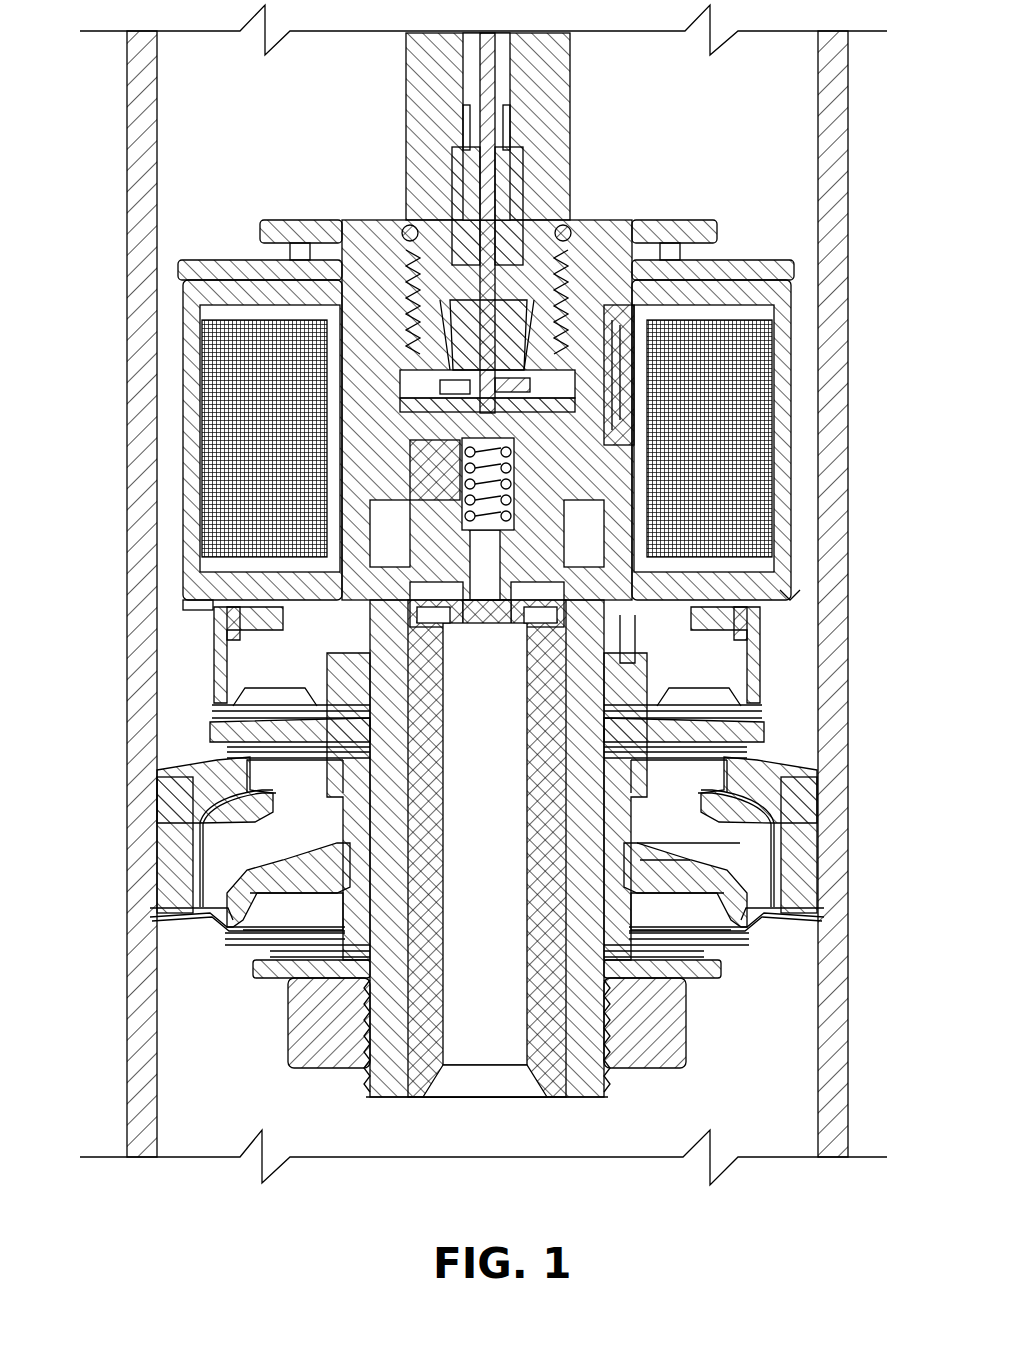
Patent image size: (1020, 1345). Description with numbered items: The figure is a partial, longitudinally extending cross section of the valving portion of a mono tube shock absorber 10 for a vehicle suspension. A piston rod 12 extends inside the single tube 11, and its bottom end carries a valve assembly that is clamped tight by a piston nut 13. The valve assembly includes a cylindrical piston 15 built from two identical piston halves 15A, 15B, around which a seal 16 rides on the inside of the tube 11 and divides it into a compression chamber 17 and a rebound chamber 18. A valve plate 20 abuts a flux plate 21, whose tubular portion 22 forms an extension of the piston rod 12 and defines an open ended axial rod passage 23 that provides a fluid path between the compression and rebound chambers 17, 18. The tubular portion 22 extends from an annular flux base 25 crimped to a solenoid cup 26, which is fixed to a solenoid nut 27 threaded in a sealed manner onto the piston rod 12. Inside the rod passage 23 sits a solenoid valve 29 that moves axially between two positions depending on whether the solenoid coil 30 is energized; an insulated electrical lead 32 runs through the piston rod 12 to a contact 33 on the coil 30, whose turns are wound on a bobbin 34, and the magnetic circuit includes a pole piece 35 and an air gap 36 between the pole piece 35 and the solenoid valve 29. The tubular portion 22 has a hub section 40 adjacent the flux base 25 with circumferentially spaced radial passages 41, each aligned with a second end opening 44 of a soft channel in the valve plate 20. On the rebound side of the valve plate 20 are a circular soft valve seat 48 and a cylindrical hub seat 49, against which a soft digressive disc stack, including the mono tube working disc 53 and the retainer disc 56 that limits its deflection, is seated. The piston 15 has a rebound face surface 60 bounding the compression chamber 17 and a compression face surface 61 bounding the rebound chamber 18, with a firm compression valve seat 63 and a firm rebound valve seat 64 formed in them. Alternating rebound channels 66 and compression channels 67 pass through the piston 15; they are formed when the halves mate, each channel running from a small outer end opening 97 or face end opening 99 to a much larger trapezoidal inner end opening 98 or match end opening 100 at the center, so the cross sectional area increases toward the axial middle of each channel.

The mono tube shock absorber 10 is at (90, 100).
The tube 11 is at (848, 73).
The piston rod 12 is at (570, 100).
The piston nut 13 is at (686, 1035).
The piston 15 is at (772, 918).
The piston half 15A is at (225, 923).
The piston half 15B is at (265, 793).
The seal 16 is at (157, 882).
The compression chamber 17 is at (486, 1132).
The rebound chamber 18 is at (709, 121).
The valve plate 20 is at (762, 632).
The flux plate 21 is at (193, 606).
The tubular portion 22 is at (597, 1097).
The axial rod passage 23 is at (487, 848).
The annular flux base 25 is at (812, 590).
The solenoid cup 26 is at (790, 332).
The solenoid nut 27 is at (655, 220).
The solenoid valve 29 is at (430, 580).
The solenoid coil 30 is at (790, 370).
The electrical lead 32 is at (497, 50).
The contact 33 is at (412, 404).
The bobbin 34 is at (690, 307).
The pole piece 35 is at (445, 472).
The air gap 36 is at (650, 463).
The hub section 40 is at (645, 660).
The radial passage 41 is at (610, 625).
The second end opening 44 is at (637, 638).
The soft valve seat 48 is at (756, 712).
The hub seat 49 is at (330, 722).
The mono tube working disc 53 is at (330, 708).
The retainer disc 56 is at (762, 740).
The rebound face surface 60 is at (792, 915).
The compression face surface 61 is at (802, 798).
The compression valve seat 63 is at (800, 795).
The rebound valve seat 64 is at (235, 942).
The rebound channel 66 is at (745, 862).
The compression channel 67 is at (210, 862).
The outer end opening 97 is at (300, 926).
The inner end opening 98 is at (695, 845).
The face end opening 99 is at (243, 800).
The match end opening 100 is at (700, 862).